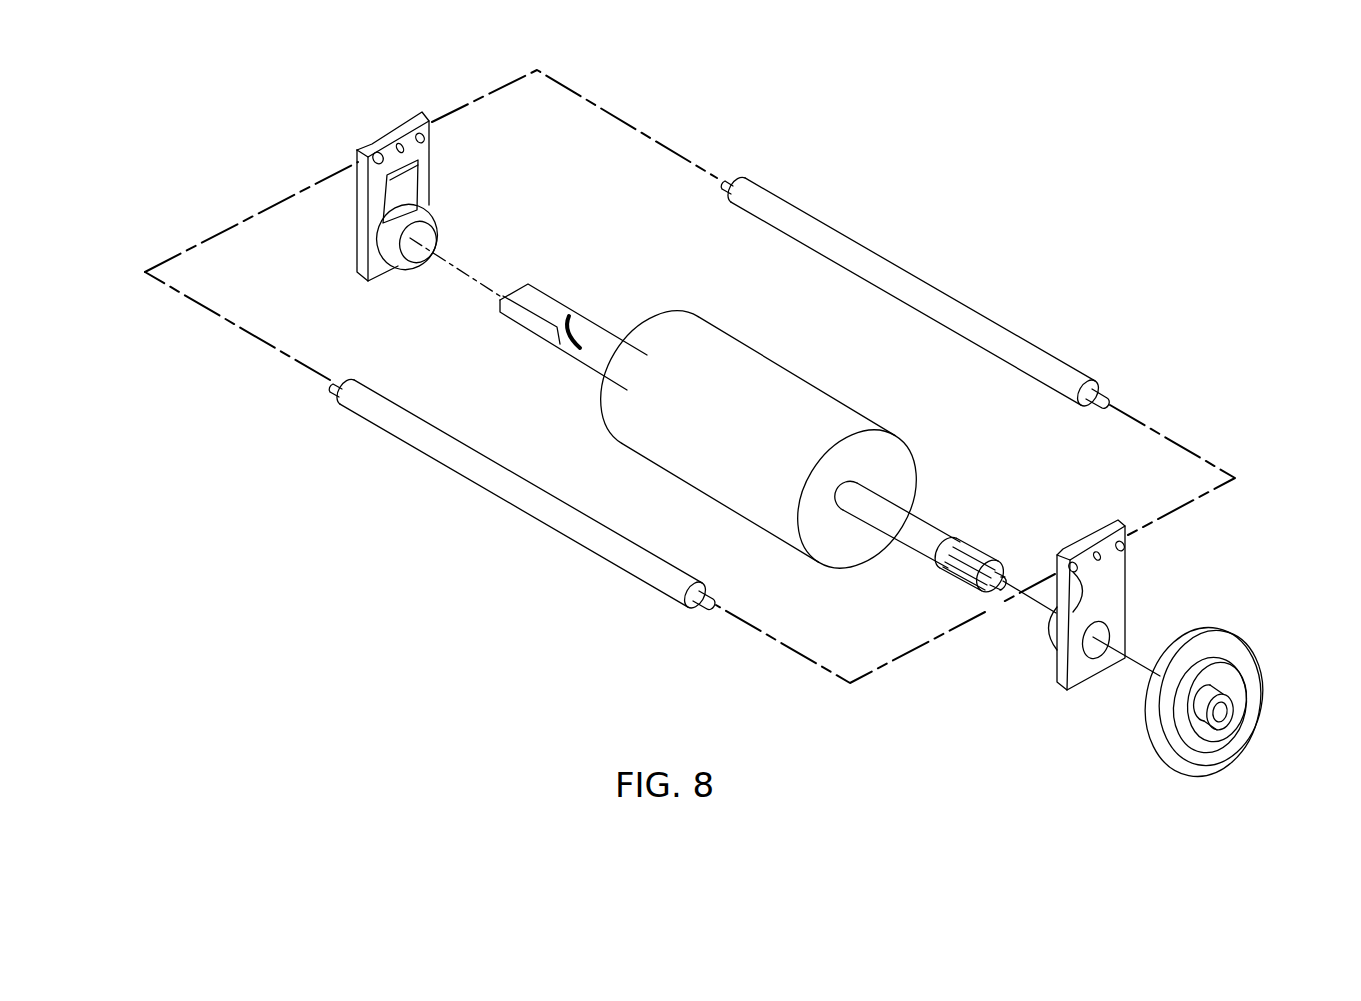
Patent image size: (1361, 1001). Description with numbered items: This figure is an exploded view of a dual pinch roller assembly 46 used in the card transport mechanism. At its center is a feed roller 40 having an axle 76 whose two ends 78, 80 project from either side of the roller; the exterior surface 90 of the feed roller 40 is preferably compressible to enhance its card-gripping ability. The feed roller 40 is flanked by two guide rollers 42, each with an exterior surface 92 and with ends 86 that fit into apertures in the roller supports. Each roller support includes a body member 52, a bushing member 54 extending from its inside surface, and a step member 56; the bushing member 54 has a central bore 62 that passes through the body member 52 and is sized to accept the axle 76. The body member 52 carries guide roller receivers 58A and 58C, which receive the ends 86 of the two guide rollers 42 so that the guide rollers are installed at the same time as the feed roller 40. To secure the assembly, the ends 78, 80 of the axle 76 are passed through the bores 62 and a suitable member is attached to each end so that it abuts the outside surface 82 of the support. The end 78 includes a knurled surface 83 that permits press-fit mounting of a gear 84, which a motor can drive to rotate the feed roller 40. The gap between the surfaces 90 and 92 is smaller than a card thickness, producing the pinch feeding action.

The feed roller 40 is at (806, 388).
The guide roller 42 is at (1023, 342).
The dual pinch roller assembly 46 is at (1040, 205).
The body member 52 is at (428, 170).
The bushing member 54 is at (432, 223).
The step member 56 is at (393, 197).
The guide roller receiver 58A is at (374, 154).
The guide roller receiver 58C is at (425, 136).
The central bore 62 is at (413, 253).
The axle 76 is at (917, 511).
The end of axle 78 is at (923, 552).
The end of axle 80 is at (597, 358).
The outside surface 82 is at (1125, 590).
The knurled surface 83 is at (973, 543).
The gear 84 is at (1250, 655).
The ends of guide rollers 86 is at (728, 176).
The exterior surface of feed roller 90 is at (777, 525).
The exterior surface of guide roller 92 is at (637, 563).